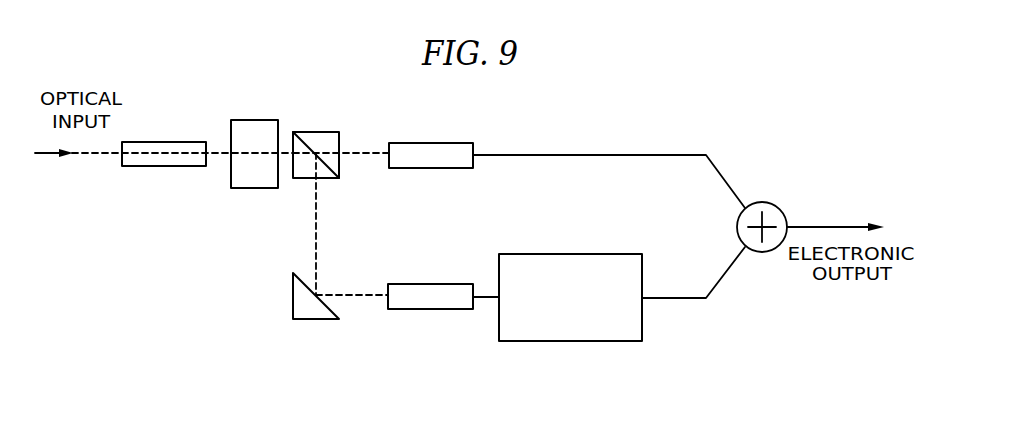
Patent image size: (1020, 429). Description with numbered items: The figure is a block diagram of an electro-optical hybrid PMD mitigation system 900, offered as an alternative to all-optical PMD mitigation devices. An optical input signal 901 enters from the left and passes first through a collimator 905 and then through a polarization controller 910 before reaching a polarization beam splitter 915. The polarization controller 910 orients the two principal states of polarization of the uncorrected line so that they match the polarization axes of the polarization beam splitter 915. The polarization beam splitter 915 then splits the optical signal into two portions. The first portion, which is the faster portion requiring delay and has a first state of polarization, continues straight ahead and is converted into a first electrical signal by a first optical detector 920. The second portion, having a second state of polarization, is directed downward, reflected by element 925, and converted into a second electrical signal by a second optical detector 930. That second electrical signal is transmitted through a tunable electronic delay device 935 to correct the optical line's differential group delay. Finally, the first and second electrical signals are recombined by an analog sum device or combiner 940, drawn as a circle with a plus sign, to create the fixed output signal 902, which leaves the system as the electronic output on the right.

The electro-optical hybrid PMD mitigation system 900 is at (719, 104).
The optical input signal 901 is at (40, 155).
The fixed output signal 902 is at (792, 224).
The collimator 905 is at (200, 166).
The polarization controller 910 is at (271, 188).
The polarization beam splitter 915 is at (330, 132).
The first optical detector 920 is at (432, 168).
The reflecting element 925 is at (330, 321).
The second optical detector 930 is at (400, 310).
The tunable electronic delay device 935 is at (550, 341).
The analog sum device or combiner 940 is at (767, 203).